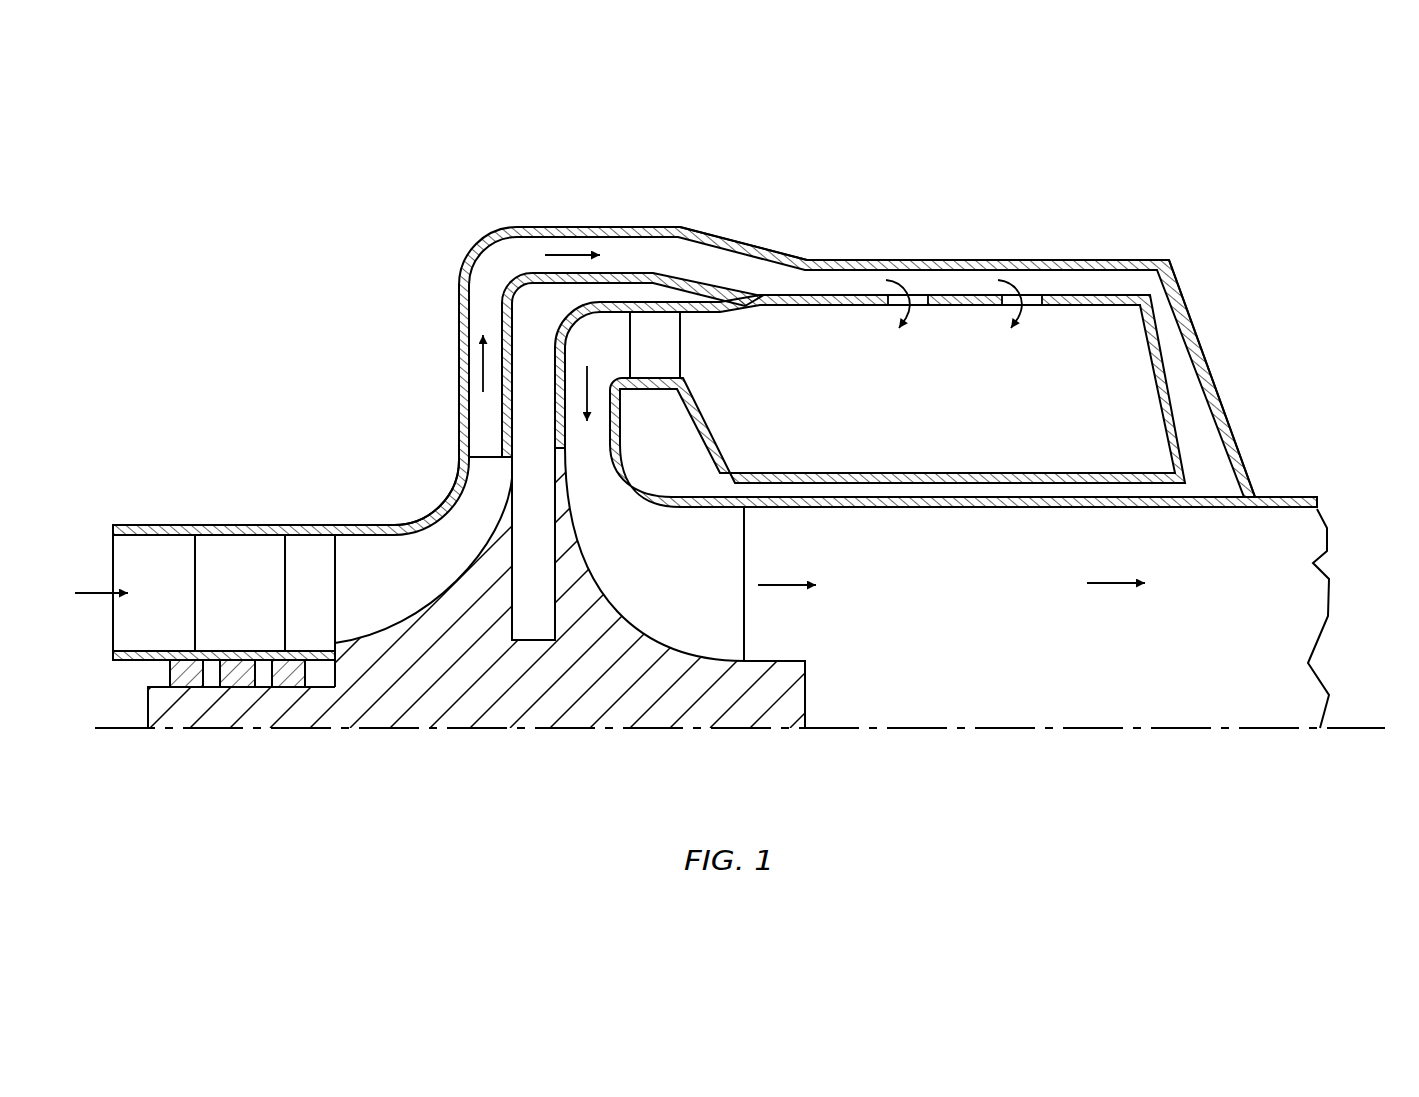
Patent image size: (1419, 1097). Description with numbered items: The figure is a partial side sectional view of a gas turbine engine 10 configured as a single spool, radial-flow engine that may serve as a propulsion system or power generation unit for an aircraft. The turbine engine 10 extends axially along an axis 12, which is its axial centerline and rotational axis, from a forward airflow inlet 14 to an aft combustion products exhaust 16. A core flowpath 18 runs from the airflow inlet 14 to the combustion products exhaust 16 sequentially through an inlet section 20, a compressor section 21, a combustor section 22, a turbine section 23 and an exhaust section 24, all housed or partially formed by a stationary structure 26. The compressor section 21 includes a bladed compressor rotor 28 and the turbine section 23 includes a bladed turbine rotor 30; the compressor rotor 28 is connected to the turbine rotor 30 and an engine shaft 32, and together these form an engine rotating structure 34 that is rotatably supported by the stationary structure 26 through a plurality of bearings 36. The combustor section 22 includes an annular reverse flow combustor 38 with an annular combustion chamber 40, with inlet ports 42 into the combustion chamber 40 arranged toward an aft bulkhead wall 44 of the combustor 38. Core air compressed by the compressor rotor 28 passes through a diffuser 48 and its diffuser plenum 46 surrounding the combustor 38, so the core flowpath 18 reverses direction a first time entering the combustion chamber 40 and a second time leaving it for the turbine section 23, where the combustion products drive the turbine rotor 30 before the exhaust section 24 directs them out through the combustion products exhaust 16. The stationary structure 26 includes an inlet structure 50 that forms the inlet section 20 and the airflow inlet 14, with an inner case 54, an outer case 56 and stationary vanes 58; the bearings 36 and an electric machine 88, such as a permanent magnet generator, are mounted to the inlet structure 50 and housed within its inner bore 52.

The gas turbine engine 10 is at (184, 276).
The axis 12 is at (1372, 730).
The airflow inlet 14 is at (113, 552).
The combustion products exhaust 16 is at (1322, 583).
The core flowpath 18 is at (504, 270).
The inlet section 20 is at (245, 492).
The compressor section 21 is at (397, 497).
The combustor section 22 is at (848, 254).
The turbine section 23 is at (662, 471).
The exhaust section 24 is at (1303, 478).
The stationary structure 26 is at (600, 218).
The compressor rotor 28 is at (403, 695).
The turbine rotor 30 is at (622, 683).
The engine shaft 32 is at (345, 712).
The engine rotating structure 34 is at (812, 686).
The bearings 36 is at (292, 688).
The combustor 38 is at (776, 290).
The combustion chamber 40 is at (943, 425).
The inlet ports 42 is at (1032, 305).
The aft bulkhead wall 44 is at (1172, 386).
The diffuser plenum 46 is at (683, 277).
The diffuser 48 is at (716, 236).
The inlet structure 50 is at (175, 516).
The inner bore 52 is at (128, 681).
The inner case 54 is at (158, 651).
The outer case 56 is at (170, 530).
The stationary vanes 58 is at (224, 620).
The electric machine 88 is at (228, 688).